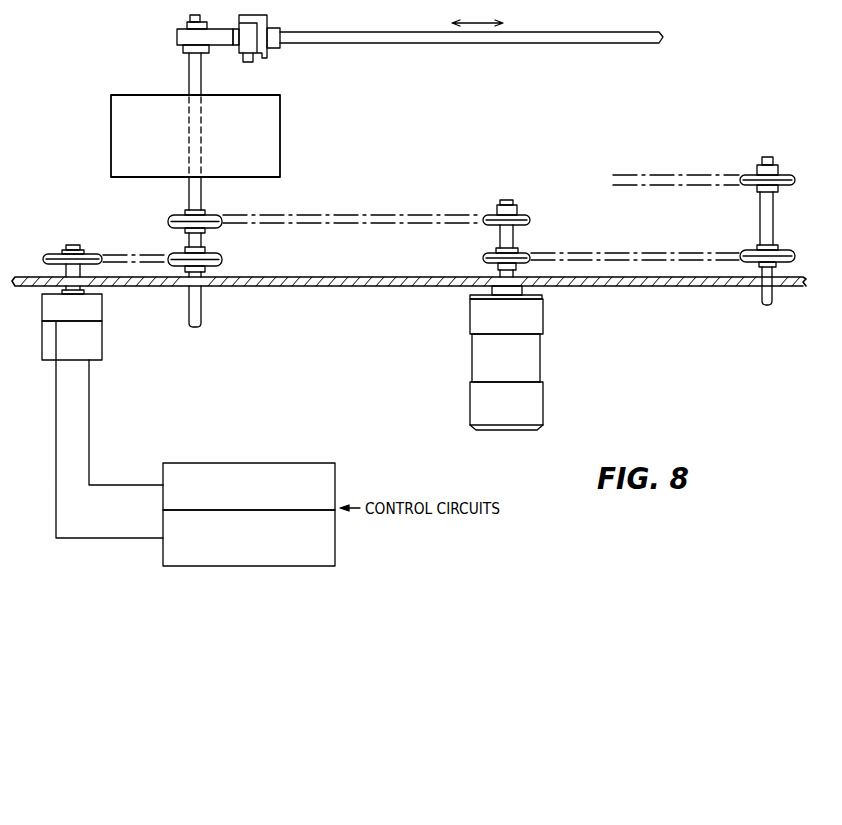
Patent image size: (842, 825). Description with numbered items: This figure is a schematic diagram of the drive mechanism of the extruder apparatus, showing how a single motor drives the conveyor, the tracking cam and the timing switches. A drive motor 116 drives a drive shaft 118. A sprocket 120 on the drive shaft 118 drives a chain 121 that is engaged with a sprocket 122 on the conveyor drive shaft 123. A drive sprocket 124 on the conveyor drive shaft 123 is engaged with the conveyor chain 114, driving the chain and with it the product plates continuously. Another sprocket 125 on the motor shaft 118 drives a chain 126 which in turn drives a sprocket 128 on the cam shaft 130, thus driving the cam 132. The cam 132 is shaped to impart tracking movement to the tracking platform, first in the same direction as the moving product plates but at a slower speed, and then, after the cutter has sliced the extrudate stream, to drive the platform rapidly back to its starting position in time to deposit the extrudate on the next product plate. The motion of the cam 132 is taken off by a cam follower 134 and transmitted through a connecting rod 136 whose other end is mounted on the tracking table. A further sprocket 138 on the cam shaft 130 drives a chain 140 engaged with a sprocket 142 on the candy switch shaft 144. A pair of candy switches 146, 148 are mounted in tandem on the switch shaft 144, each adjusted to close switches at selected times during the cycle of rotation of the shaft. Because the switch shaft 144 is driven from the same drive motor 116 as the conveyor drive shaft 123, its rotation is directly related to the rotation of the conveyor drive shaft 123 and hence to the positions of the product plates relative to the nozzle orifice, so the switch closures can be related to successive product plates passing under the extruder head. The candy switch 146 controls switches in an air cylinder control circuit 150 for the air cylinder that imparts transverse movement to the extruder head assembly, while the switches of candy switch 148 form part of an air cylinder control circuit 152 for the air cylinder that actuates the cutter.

The conveyor chain 114 is at (662, 178).
The drive motor 116 is at (478, 357).
The drive shaft 118 is at (507, 240).
The sprocket 120 is at (490, 255).
The chain 121 is at (643, 258).
The sprocket 122 is at (795, 256).
The conveyor drive shaft 123 is at (765, 218).
The drive sprocket 124 is at (745, 177).
The sprocket 125 is at (516, 215).
The chain 126 is at (382, 215).
The sprocket 128 is at (215, 216).
The cam shaft 130 is at (189, 68).
The cam 132 is at (178, 33).
The cam follower 134 is at (265, 58).
The connecting rod 136 is at (397, 43).
The sprocket 138 is at (222, 250).
The chain 140 is at (152, 252).
The sprocket 142 is at (60, 250).
The candy switch shaft 144 is at (68, 278).
The candy switch 146 is at (93, 311).
The candy switch 148 is at (93, 348).
The air cylinder control circuit 150 is at (249, 538).
The air cylinder control circuit 152 is at (249, 486).